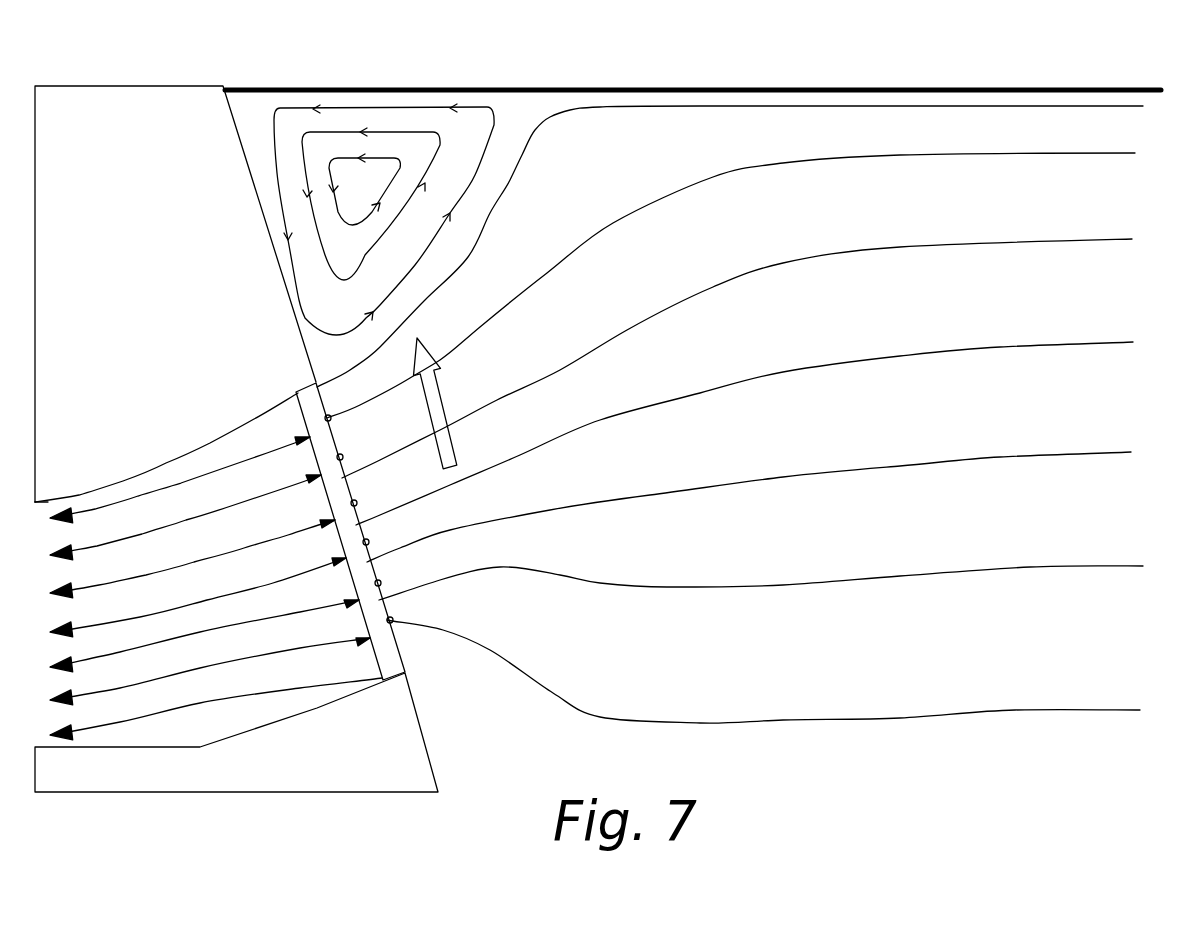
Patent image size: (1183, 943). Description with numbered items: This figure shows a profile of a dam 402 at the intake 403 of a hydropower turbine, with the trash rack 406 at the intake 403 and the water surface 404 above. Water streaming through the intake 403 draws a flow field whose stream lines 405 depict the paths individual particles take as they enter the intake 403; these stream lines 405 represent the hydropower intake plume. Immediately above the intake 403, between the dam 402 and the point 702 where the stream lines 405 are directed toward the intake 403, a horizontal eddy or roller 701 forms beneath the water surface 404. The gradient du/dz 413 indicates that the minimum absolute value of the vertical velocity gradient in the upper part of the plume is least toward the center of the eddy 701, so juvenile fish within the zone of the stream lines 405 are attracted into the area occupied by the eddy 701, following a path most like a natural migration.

The dam 402 is at (183, 89).
The water surface 404 is at (550, 88).
The horizontal eddy (roller) 701 is at (413, 126).
The point where stream lines are directed towards the intake 702 is at (522, 170).
The stream lines 405 is at (829, 450).
The intake 403 is at (204, 598).
The trash rack 406 is at (382, 544).
The gradient du/dz 413 is at (446, 410).